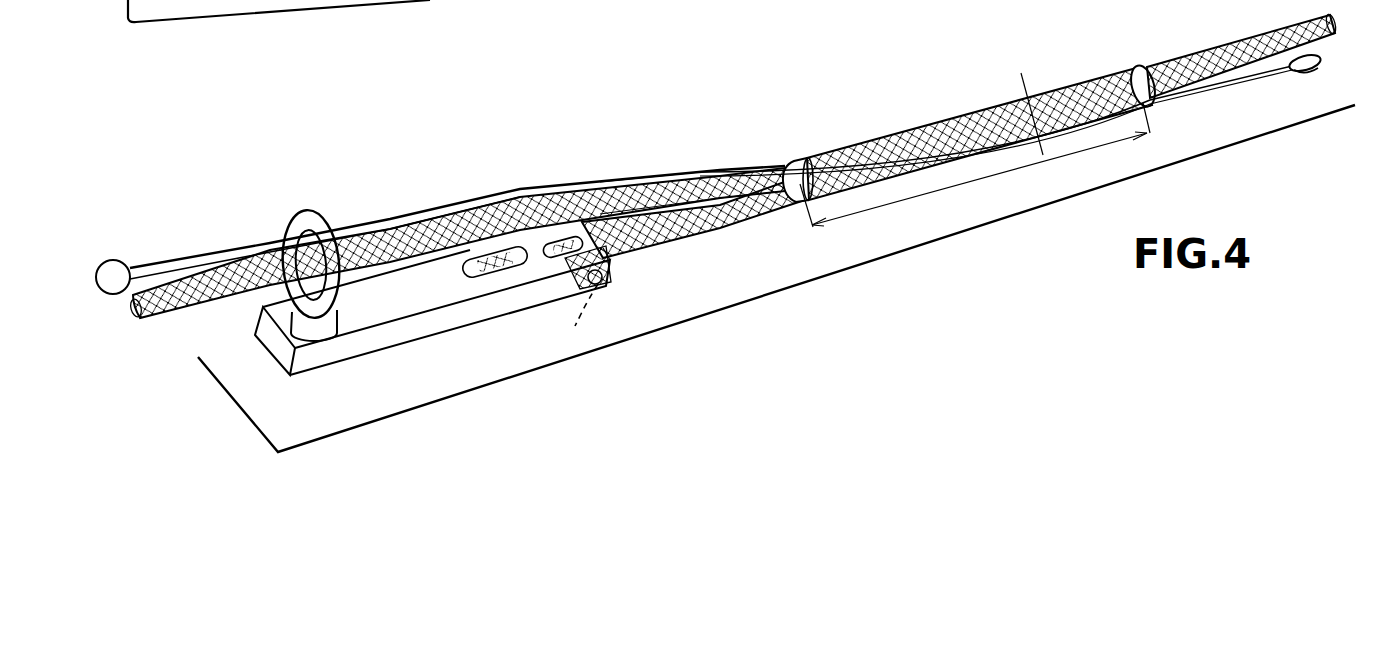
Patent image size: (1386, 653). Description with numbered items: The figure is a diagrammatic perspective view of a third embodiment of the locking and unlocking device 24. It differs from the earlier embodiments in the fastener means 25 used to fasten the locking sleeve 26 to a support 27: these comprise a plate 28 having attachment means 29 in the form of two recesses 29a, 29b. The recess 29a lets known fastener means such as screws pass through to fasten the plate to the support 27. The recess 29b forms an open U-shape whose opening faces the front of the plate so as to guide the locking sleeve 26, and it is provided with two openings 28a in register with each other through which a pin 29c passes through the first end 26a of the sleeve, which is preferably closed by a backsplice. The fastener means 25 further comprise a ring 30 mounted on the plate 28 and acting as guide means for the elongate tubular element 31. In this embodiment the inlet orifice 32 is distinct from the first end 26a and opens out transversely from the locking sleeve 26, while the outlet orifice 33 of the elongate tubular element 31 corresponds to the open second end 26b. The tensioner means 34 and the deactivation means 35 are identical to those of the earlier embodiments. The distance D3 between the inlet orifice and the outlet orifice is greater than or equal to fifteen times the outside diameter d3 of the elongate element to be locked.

The locking and unlocking device 24 is at (768, 212).
The fastener means 25 is at (380, 343).
The locking sleeve 26 is at (938, 132).
The first end of the locking sleeve 26a is at (784, 195).
The second end of the locking sleeve 26b is at (1150, 100).
The support 27 is at (888, 237).
The plate 28 is at (430, 325).
The openings 28a is at (606, 282).
The attachment means 29 is at (505, 242).
The recess 29a is at (466, 263).
The recess 29b is at (588, 230).
The pin 29c is at (567, 316).
The ring 30 is at (308, 212).
The elongate tubular element 31 is at (702, 170).
The inlet orifice 32 is at (784, 166).
The outlet orifice 33 is at (1133, 66).
The tensioner means 34 is at (1250, 80).
The deactivation means 35 is at (155, 264).
The distance D3 is at (1010, 186).
The outside diameter d3 is at (1037, 108).